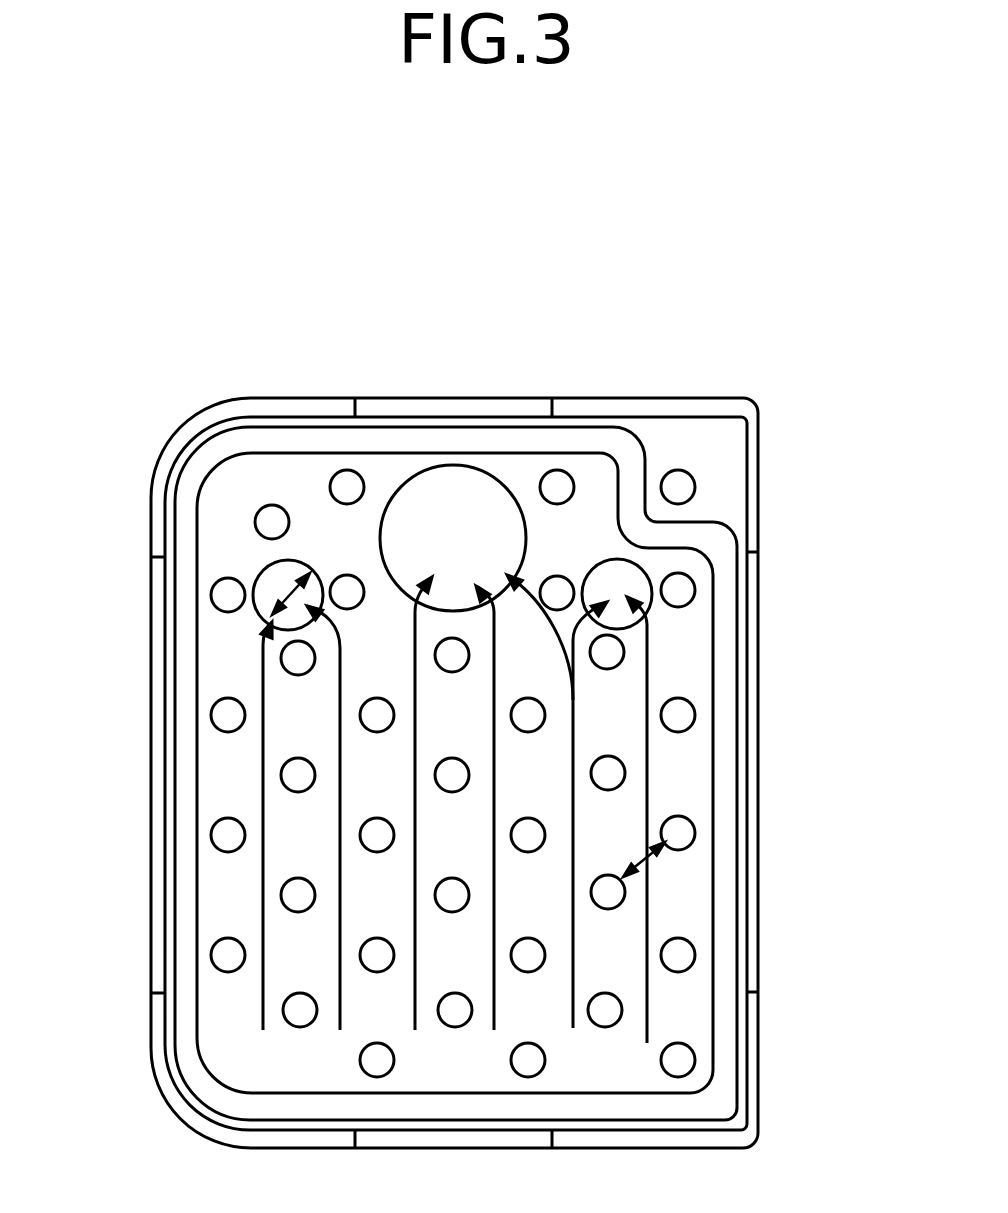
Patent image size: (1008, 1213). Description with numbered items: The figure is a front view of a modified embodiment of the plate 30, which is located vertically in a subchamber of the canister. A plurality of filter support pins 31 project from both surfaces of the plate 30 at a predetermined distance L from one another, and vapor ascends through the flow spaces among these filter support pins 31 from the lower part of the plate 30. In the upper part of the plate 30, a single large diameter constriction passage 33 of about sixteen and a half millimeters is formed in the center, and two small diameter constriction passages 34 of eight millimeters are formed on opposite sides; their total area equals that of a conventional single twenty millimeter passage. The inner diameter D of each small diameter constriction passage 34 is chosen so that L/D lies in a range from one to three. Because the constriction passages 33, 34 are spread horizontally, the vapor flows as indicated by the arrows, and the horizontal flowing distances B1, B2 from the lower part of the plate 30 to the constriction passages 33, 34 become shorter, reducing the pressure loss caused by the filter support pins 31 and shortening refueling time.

The plate 30 is at (690, 768).
The filter support pins 31 is at (678, 833).
The large diameter constriction passage 33 is at (453, 492).
The small diameter constriction passages 34 is at (275, 572).
The horizontal flowing distance B1 is at (647, 998).
The horizontal flowing distance B2 is at (262, 897).
The inner diameter of small diameter constriction passage D is at (277, 593).
The predetermined distance between filter support pins L is at (647, 870).